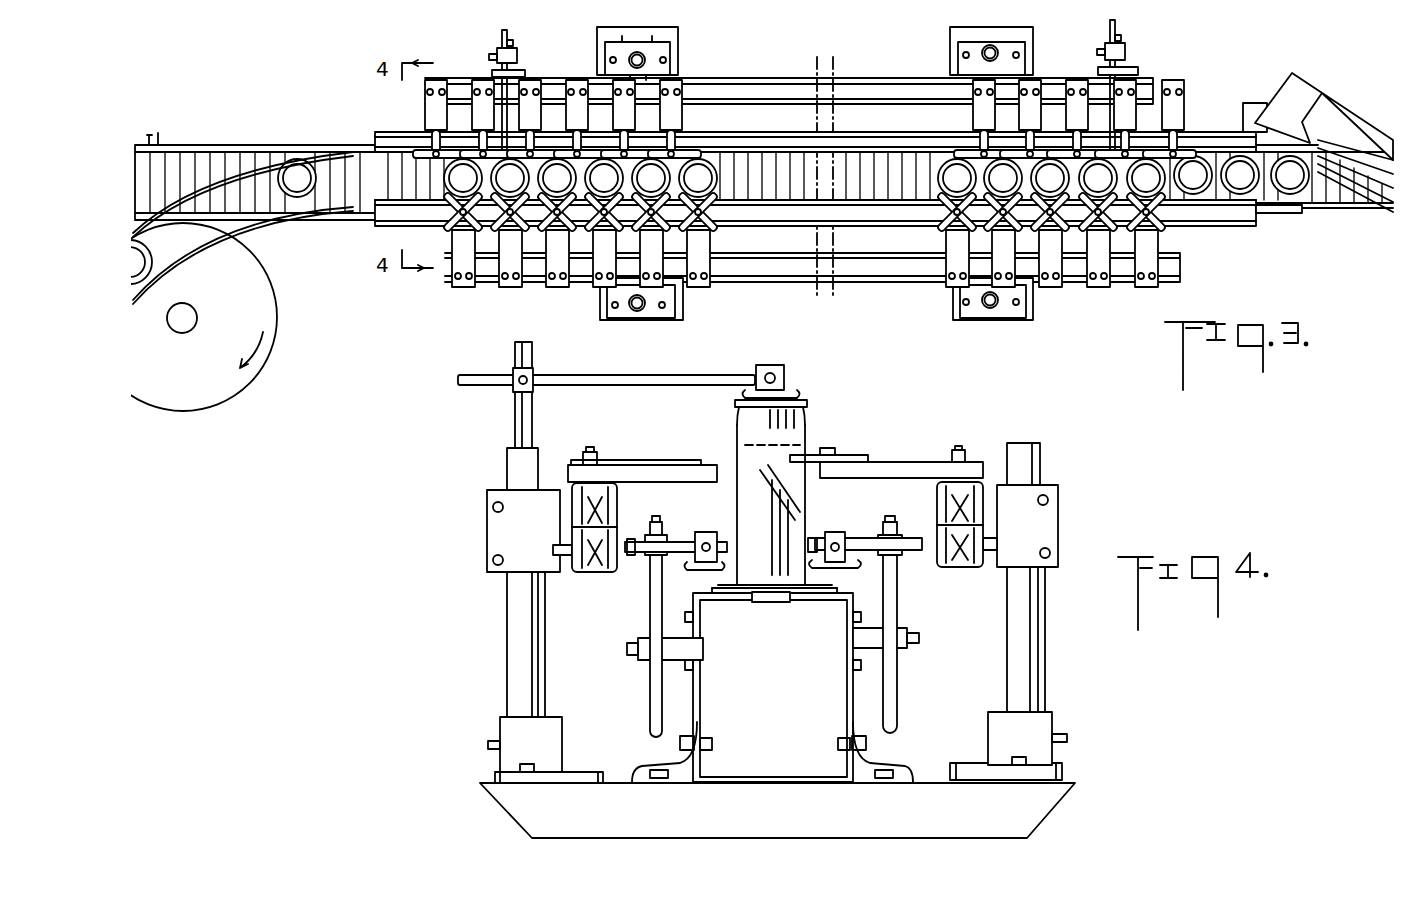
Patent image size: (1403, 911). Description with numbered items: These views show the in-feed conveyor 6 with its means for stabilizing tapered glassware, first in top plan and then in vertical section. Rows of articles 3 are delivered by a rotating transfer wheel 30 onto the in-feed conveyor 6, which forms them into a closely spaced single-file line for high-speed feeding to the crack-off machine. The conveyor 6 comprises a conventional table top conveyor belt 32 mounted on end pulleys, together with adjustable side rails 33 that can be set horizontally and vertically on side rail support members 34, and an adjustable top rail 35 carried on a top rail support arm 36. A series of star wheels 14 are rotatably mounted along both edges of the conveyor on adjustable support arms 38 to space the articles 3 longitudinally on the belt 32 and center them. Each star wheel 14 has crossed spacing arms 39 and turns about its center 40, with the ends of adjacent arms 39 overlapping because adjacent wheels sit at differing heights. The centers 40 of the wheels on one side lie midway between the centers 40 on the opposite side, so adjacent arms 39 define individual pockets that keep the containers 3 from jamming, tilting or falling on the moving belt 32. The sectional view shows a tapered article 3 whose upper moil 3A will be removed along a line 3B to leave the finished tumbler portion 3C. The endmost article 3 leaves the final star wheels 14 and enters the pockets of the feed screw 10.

In FIG. 3, the article 3 is at (293, 167).
In FIG. 4, the moil 3A is at (795, 433).
In FIG. 4, the crack-off line 3B is at (807, 442).
In FIG. 4, the tumbler portion 3C is at (750, 502).
In FIG. 3, the in-feed conveyor 6 is at (257, 158).
In FIG. 4, the in-feed conveyor 6 is at (830, 588).
In FIG. 3, the feed screw 10 is at (1336, 115).
In FIG. 3, the star wheels 14 is at (692, 134).
In FIG. 4, the star wheels 14 is at (683, 460).
In FIG. 3, the rotating transfer wheel 30 is at (243, 267).
In FIG. 3, the conveyor belt 32 is at (903, 175).
In FIG. 3, the side rails 33 is at (347, 157).
In FIG. 4, the side rails 33 is at (735, 590).
In FIG. 4, the side rail support members 34 is at (650, 588).
In FIG. 4, the top rail 35 is at (792, 392).
In FIG. 4, the top rail support arm 36 is at (650, 378).
In FIG. 3, the support arms 38 is at (678, 98).
In FIG. 3, the spacing arms 39 is at (689, 148).
In FIG. 3, the center 40 is at (1121, 148).